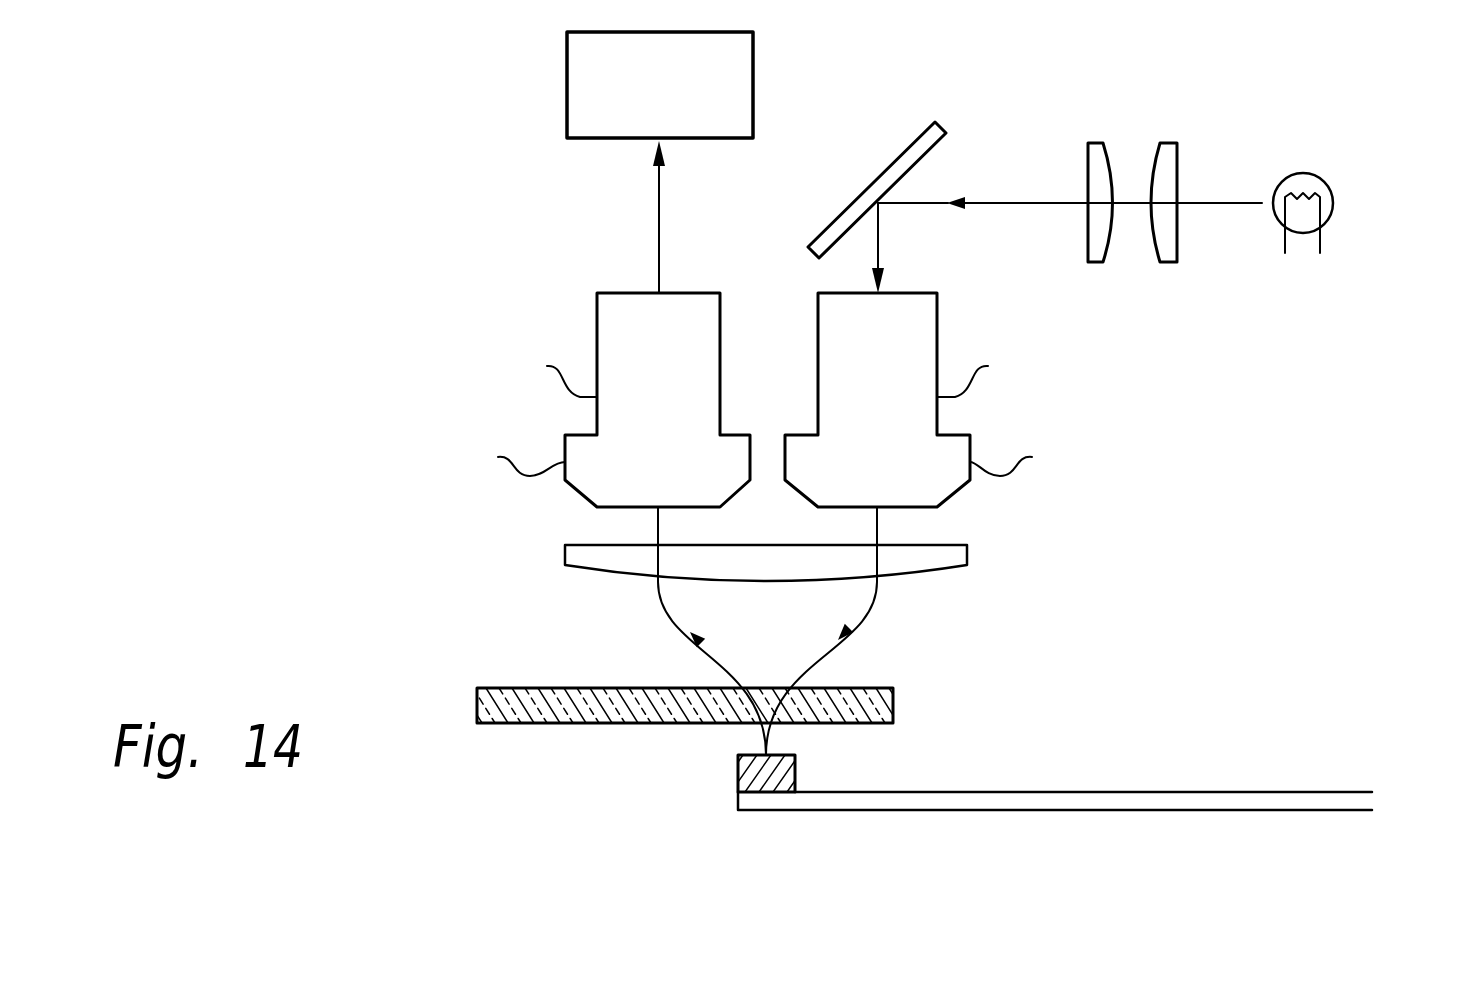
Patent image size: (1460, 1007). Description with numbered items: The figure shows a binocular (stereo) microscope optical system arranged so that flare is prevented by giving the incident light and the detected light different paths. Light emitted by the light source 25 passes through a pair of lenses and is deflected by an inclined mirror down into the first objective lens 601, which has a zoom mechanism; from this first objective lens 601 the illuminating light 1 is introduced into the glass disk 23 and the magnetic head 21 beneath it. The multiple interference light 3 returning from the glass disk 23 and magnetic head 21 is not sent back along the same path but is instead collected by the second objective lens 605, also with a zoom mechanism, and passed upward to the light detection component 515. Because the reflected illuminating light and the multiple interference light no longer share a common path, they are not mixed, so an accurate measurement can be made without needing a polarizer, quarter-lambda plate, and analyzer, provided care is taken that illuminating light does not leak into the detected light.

The light detection component 515 is at (567, 86).
The light source 25 is at (1302, 174).
The second objective lens 605 is at (431, 400).
The first objective lens 601 is at (1098, 400).
The multiple interference light 3 is at (667, 602).
The illuminating light 1 is at (866, 602).
The glass disk 23 is at (515, 688).
The magnetic head 21 is at (738, 777).